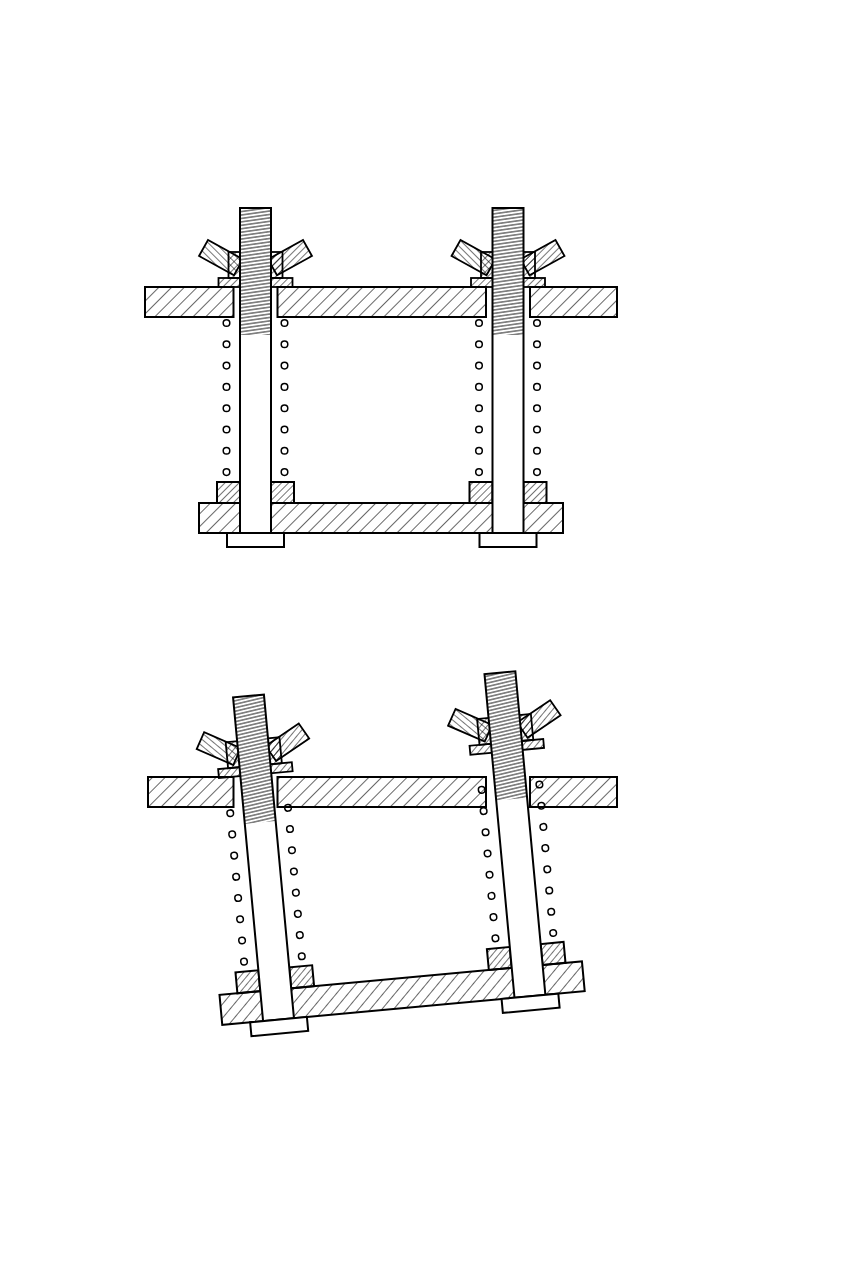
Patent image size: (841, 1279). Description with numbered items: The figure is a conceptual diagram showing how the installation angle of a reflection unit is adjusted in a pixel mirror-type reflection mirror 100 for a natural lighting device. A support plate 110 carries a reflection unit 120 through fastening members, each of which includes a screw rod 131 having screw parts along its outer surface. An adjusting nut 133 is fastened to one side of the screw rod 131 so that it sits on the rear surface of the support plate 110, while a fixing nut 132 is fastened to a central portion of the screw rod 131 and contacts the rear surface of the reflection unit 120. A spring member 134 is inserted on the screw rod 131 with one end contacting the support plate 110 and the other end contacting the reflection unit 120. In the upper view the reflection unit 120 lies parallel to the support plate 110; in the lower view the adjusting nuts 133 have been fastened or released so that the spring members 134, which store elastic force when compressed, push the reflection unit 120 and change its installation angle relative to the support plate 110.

The pixel mirror-type reflection mirror 100 is at (586, 165).
The support plate 110 is at (381, 287).
The reflection unit 120 is at (424, 520).
The screw rod 131 is at (512, 420).
The fixing nut 132 is at (547, 487).
The adjusting nut 133 is at (556, 252).
The spring member 134 is at (539, 366).